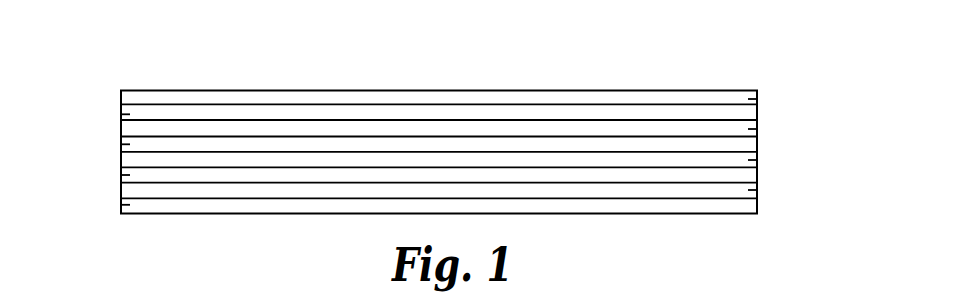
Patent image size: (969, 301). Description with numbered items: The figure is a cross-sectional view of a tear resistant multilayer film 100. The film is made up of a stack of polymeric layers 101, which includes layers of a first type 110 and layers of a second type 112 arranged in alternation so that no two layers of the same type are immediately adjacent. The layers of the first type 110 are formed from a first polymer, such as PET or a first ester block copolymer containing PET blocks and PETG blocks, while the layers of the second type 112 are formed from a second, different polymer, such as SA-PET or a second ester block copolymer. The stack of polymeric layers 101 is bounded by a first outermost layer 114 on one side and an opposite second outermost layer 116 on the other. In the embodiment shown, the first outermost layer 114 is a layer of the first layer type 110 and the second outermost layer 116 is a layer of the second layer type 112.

The multilayer film 100 is at (715, 63).
The stack of polymeric layers 101 is at (402, 88).
The layers of a first type 110 is at (750, 99).
The layers of a second type 112 is at (126, 114).
The first outermost layer 114 is at (513, 97).
The second outermost layer 116 is at (592, 205).